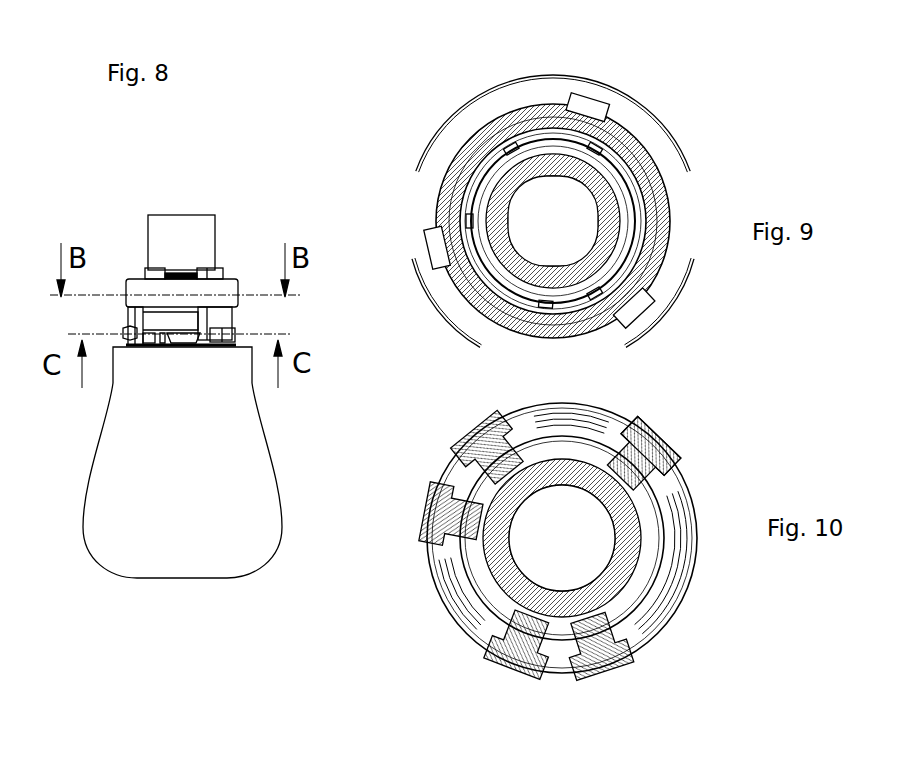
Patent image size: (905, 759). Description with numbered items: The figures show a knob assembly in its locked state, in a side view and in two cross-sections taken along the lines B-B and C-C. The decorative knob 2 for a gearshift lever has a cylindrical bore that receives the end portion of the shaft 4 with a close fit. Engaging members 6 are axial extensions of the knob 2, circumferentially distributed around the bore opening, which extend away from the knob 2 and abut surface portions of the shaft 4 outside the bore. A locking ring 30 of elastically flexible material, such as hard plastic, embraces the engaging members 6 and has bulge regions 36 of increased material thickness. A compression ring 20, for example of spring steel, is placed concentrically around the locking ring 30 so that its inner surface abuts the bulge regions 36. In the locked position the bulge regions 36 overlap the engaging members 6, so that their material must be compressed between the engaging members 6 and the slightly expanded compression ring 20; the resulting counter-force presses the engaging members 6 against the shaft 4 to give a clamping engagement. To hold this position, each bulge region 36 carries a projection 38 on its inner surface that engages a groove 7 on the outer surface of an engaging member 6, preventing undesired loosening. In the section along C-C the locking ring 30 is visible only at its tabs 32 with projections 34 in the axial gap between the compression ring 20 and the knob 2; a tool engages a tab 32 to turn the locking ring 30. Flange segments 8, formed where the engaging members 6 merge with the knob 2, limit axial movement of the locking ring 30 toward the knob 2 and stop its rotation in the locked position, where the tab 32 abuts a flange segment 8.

In FIG. 8, the decorative knob 2 is at (113, 573).
In FIG. 9, the decorative knob 2 is at (553, 211).
In FIG. 8, the shaft 4 is at (166, 215).
In FIG. 9, the shaft 4 is at (513, 200).
In FIG. 10, the shaft 4 is at (500, 517).
In FIG. 8, the engaging members 6 is at (222, 268).
In FIG. 9, the engaging members 6 is at (547, 143).
In FIG. 10, the engaging members 6 is at (660, 557).
In FIG. 9, the grooves 7 is at (593, 148).
In FIG. 10, the grooves 7 is at (630, 457).
In FIG. 10, the flange segments 8 is at (695, 503).
In FIG. 8, the compression ring 20 is at (128, 279).
In FIG. 9, the compression ring 20 is at (670, 250).
In FIG. 8, the locking ring 30 is at (160, 317).
In FIG. 9, the locking ring 30 is at (670, 190).
In FIG. 8, the tab 32 is at (217, 317).
In FIG. 10, the tab 32 is at (647, 427).
In FIG. 8, the projections 34 is at (236, 348).
In FIG. 10, the projections 34 is at (673, 442).
In FIG. 9, the bulge regions 36 is at (613, 140).
In FIG. 9, the projection 38 is at (573, 100).